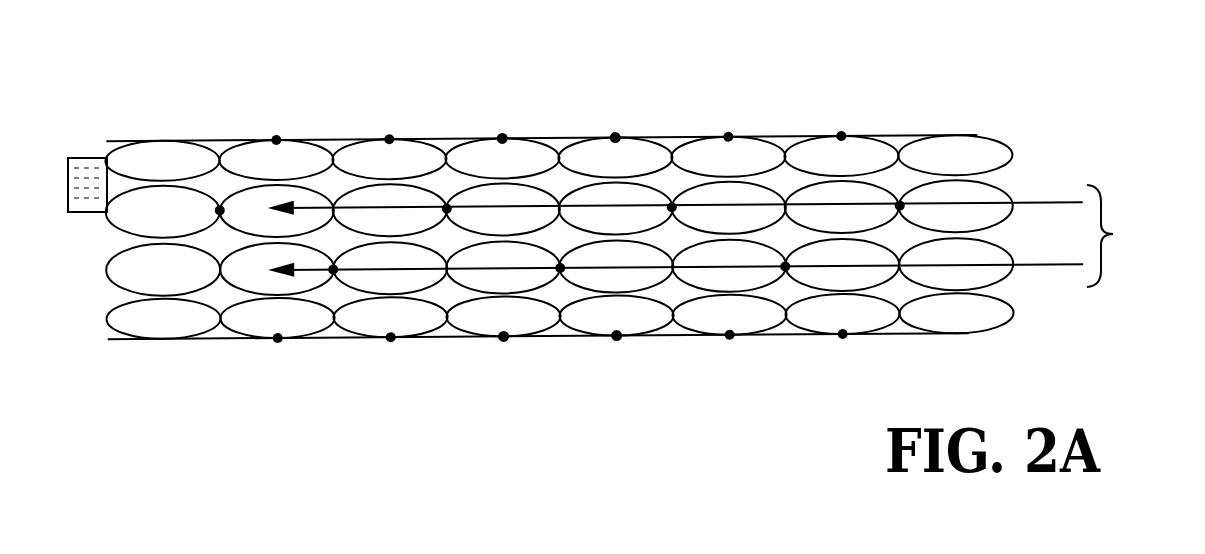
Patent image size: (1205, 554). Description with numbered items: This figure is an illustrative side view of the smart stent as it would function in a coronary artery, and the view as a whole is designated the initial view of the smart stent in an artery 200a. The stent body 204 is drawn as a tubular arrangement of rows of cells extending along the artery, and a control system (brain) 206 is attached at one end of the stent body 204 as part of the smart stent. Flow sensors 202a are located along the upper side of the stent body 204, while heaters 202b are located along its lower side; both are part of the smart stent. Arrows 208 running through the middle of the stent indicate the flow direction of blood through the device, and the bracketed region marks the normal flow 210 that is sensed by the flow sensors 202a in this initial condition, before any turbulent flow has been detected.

The initial view of smart stent in an artery 200a is at (922, 66).
The flow sensors 202a is at (615, 137).
The heaters 202b is at (615, 338).
The stent body 204 is at (782, 137).
The control system (brain) 206 is at (93, 158).
The flow direction 208 is at (305, 204).
The normal flow 210 is at (1136, 236).